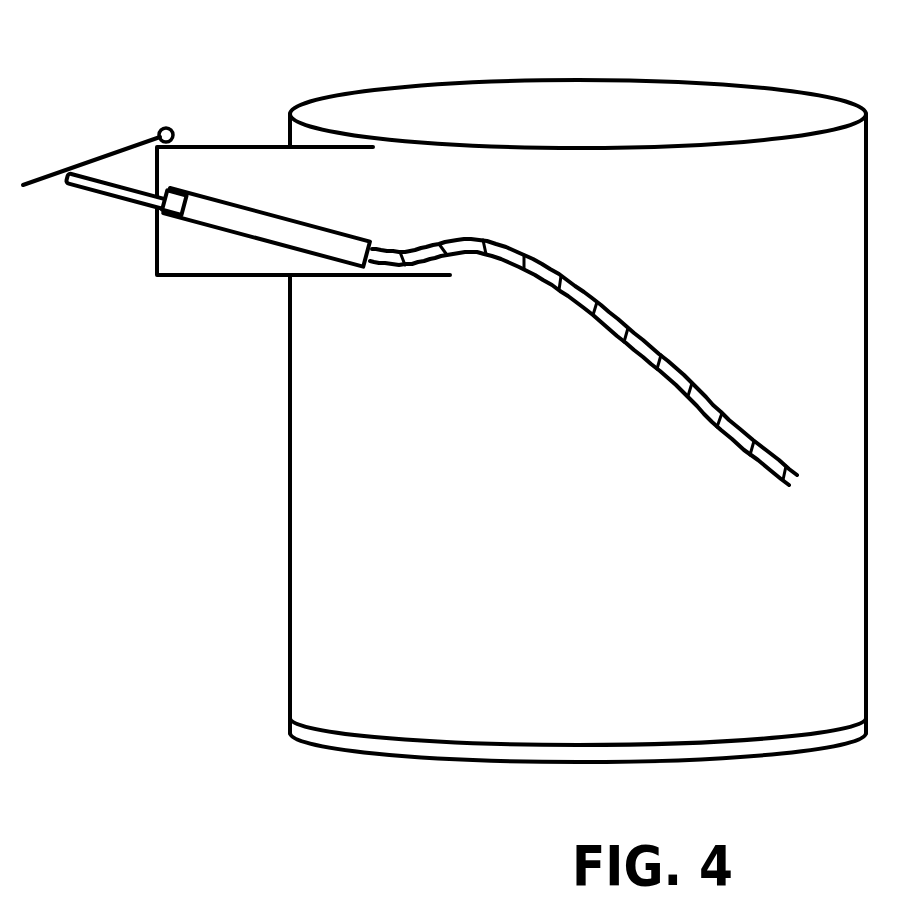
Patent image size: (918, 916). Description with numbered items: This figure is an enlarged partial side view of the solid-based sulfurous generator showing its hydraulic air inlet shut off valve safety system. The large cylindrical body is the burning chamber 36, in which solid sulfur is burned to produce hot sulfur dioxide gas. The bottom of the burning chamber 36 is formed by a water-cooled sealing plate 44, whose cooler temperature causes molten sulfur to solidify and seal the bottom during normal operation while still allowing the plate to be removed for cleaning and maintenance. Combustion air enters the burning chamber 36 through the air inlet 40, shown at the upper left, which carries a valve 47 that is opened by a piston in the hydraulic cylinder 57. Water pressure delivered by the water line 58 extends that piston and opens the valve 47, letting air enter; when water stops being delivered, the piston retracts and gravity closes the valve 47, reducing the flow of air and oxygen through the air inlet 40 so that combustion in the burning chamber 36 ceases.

The burning chamber 36 is at (600, 633).
The air inlet 40 is at (237, 150).
The water-cooled sealing plate 44 is at (415, 758).
The valve 47 is at (113, 148).
The hydraulic cylinder 57 is at (308, 240).
The water line 58 is at (642, 330).